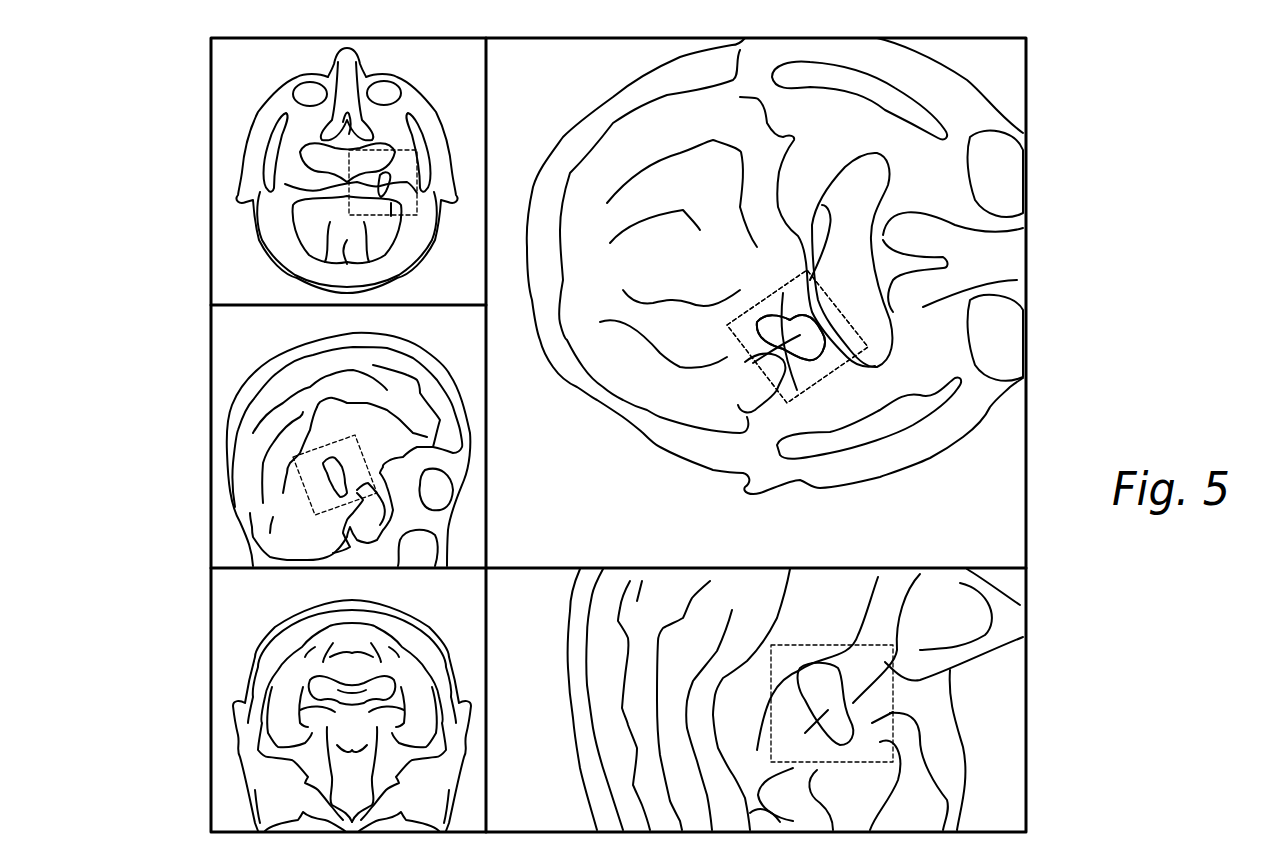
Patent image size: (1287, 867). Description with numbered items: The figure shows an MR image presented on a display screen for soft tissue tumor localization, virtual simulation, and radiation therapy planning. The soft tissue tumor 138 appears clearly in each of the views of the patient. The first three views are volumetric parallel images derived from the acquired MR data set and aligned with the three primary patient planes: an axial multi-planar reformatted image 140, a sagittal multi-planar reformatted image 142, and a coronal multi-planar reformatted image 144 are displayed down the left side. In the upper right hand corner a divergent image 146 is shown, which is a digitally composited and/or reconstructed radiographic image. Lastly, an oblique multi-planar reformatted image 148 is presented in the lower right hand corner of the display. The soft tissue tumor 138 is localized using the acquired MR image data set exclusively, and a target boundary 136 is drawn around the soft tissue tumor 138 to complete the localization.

The target boundary 136 is at (770, 297).
The soft tissue tumor 138 is at (757, 363).
The axial multi-planar reformatted image 140 is at (192, 222).
The sagittal multi-planar reformatted image 142 is at (192, 503).
The coronal multi-planar reformatted image 144 is at (192, 778).
The divergent image 146 is at (1044, 257).
The oblique multi-planar reformatted image 148 is at (1044, 730).